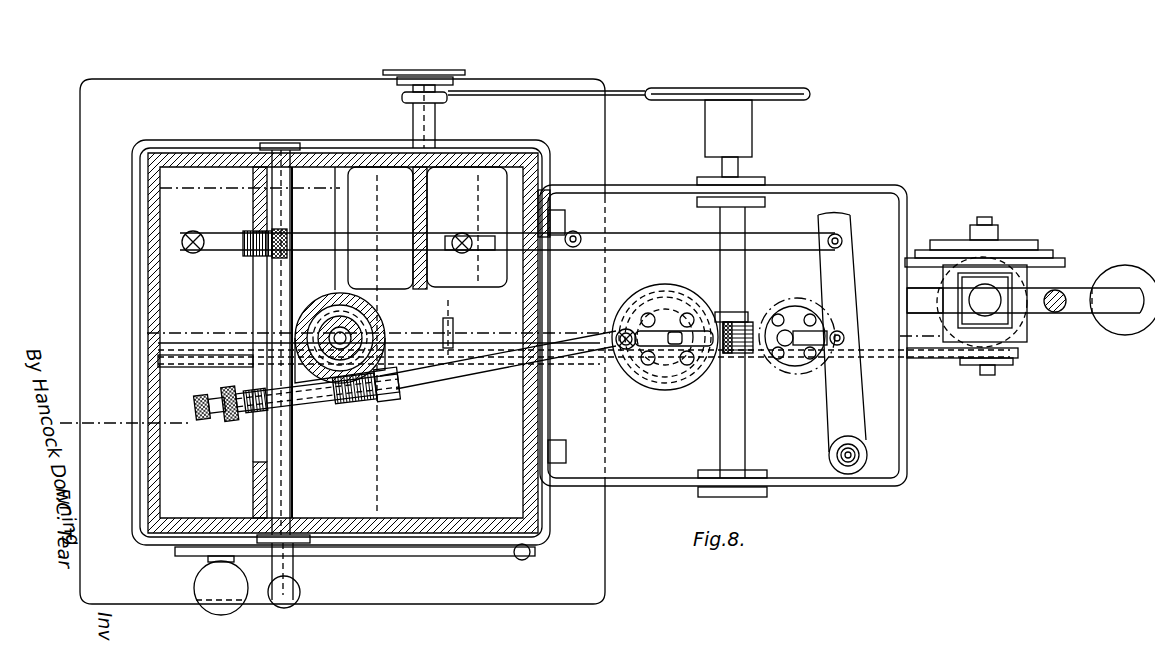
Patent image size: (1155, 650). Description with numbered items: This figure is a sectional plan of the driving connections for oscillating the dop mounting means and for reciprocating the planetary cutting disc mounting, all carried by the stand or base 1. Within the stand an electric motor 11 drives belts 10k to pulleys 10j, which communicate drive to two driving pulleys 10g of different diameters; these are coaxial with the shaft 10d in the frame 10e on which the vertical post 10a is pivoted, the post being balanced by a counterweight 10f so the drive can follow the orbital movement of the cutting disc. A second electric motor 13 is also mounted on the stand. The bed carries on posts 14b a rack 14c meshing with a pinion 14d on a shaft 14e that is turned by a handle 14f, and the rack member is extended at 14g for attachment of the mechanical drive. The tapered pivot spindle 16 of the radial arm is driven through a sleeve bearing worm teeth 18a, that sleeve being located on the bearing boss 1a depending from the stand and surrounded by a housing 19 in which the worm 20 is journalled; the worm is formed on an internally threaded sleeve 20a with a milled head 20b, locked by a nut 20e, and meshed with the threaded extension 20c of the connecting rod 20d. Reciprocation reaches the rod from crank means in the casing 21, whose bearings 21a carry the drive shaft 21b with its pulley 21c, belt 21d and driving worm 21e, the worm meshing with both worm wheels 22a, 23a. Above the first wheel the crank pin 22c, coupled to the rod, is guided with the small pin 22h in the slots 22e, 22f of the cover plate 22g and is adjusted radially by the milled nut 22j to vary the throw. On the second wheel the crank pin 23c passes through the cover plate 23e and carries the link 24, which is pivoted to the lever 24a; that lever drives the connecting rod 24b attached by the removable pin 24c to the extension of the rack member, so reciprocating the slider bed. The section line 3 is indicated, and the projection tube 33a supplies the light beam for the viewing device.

The stand or base 1 is at (150, 233).
The bearing boss 1a is at (328, 328).
The section line 3 is at (72, 422).
The electric motor 11 is at (212, 315).
The electric motor 13 is at (406, 199).
The posts 14b is at (194, 236).
The rack 14c is at (286, 240).
The pinion 14d is at (294, 339).
The shaft 14e is at (290, 480).
The handle 14f is at (298, 588).
The rack member extension 14g is at (459, 235).
The tapered pivot spindle 16 is at (328, 320).
The worm teeth 18a is at (340, 305).
The housing 19 is at (368, 320).
The worm 20 is at (352, 398).
The internally screwthreaded sleeve 20a is at (258, 410).
The milled head 20b is at (229, 428).
The threaded extension 20c is at (203, 420).
The connecting rod 20d is at (442, 358).
The nut 20e is at (214, 398).
The casing 21 is at (903, 222).
The bearings 21a is at (762, 205).
The drive shaft 21b is at (738, 430).
The pulley 21c is at (727, 124).
The belt 21d is at (526, 92).
The driving worm 21e is at (747, 356).
The worm wheel 22a is at (656, 389).
The crank pin 22c is at (618, 348).
The slot 22e is at (622, 330).
The slot 22f is at (692, 350).
The cover plate 22g is at (704, 292).
The small pin 22h is at (670, 332).
The milled nut 22j is at (742, 322).
The worm wheel 23a is at (840, 276).
The crank pin 23c is at (787, 330).
The cover plate 23e is at (802, 370).
The link 24 is at (842, 346).
The lever 24a is at (852, 406).
The connecting rod 24b is at (636, 240).
The removable pin 24c is at (575, 232).
The post 10a is at (1035, 306).
The shaft 10d is at (1020, 360).
The frame 10e is at (1030, 290).
The counterweight 10f is at (938, 322).
The driving pulleys 10g is at (1000, 252).
The pulleys 10j is at (1006, 366).
The belts 10k is at (922, 352).
The projection tube 33a is at (462, 315).